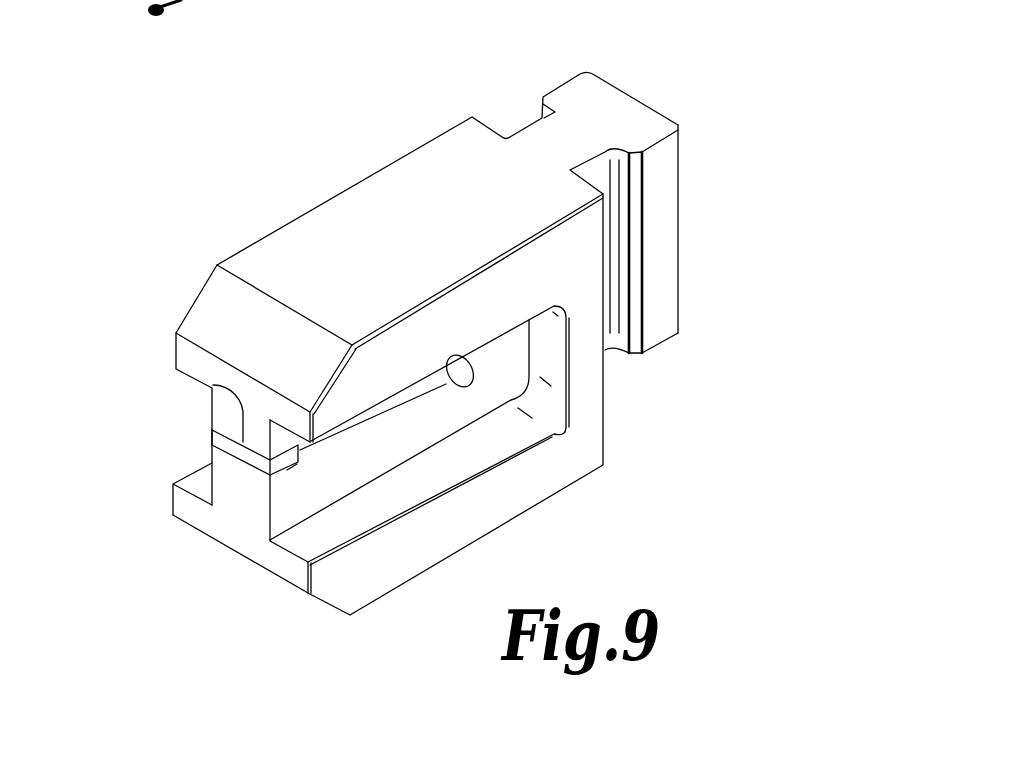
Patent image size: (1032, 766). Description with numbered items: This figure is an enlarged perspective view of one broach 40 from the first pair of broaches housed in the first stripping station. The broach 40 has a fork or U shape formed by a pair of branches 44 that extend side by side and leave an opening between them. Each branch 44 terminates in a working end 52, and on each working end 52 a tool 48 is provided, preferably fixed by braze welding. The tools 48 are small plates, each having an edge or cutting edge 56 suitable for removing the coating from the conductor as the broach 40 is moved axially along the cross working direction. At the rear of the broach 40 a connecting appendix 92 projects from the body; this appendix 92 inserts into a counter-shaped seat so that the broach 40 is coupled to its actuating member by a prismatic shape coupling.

The broach 40 is at (409, 206).
The branches 44 is at (267, 272).
The tool 48 is at (178, 372).
The working end 52 is at (176, 274).
The cutting edge 56 is at (213, 442).
The connecting appendix 92 is at (626, 114).